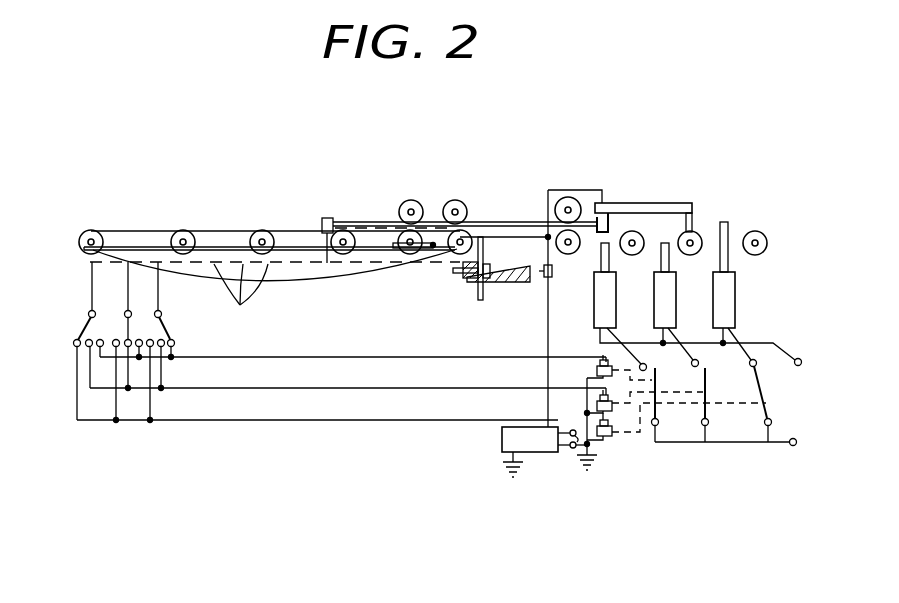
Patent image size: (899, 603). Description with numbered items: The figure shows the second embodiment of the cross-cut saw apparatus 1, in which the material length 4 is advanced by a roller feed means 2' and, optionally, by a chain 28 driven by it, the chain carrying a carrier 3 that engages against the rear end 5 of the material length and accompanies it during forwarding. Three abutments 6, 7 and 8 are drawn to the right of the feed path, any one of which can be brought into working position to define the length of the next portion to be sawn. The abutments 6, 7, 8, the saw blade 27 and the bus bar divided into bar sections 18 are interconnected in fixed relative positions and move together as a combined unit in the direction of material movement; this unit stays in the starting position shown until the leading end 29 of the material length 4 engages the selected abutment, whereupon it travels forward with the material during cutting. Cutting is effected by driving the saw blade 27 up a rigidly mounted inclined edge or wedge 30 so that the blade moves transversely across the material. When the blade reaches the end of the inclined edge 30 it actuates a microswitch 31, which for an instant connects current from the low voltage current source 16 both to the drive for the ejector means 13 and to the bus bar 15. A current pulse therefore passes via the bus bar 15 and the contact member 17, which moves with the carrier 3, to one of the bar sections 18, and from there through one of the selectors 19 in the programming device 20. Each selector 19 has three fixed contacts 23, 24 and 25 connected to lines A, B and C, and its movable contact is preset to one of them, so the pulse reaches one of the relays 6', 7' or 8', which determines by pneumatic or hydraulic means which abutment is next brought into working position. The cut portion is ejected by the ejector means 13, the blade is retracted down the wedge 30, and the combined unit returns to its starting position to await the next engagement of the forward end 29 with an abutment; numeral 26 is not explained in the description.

The cross-cut saw apparatus 1 is at (534, 186).
The roller feed means 2' is at (433, 185).
The carrier 3 is at (327, 218).
The material length 4 is at (490, 222).
The rear end of the material 5 is at (347, 228).
The abutment 6 is at (590, 285).
The abutment 7 is at (653, 285).
The abutment 8 is at (712, 275).
The relay 6' is at (583, 369).
The relay 7' is at (627, 443).
The relay 8' is at (607, 455).
The ejector means 13 is at (660, 205).
The bus bar 15 is at (142, 242).
The low voltage current source 16 is at (542, 450).
The contact member 17 is at (327, 263).
The bar sections 18 is at (240, 300).
The selectors 19 is at (97, 322).
The programming device 20 is at (270, 432).
The fixed contact 23 is at (73, 343).
The fixed contact 24 is at (86, 346).
The fixed contact 25 is at (98, 346).
The switch arm 26 is at (84, 328).
The saw blade 27 is at (477, 288).
The chain 28 is at (218, 232).
The leading end of the material length 29 is at (600, 215).
The inclined edge or wedge 30 is at (517, 283).
The microswitch 31 is at (541, 286).